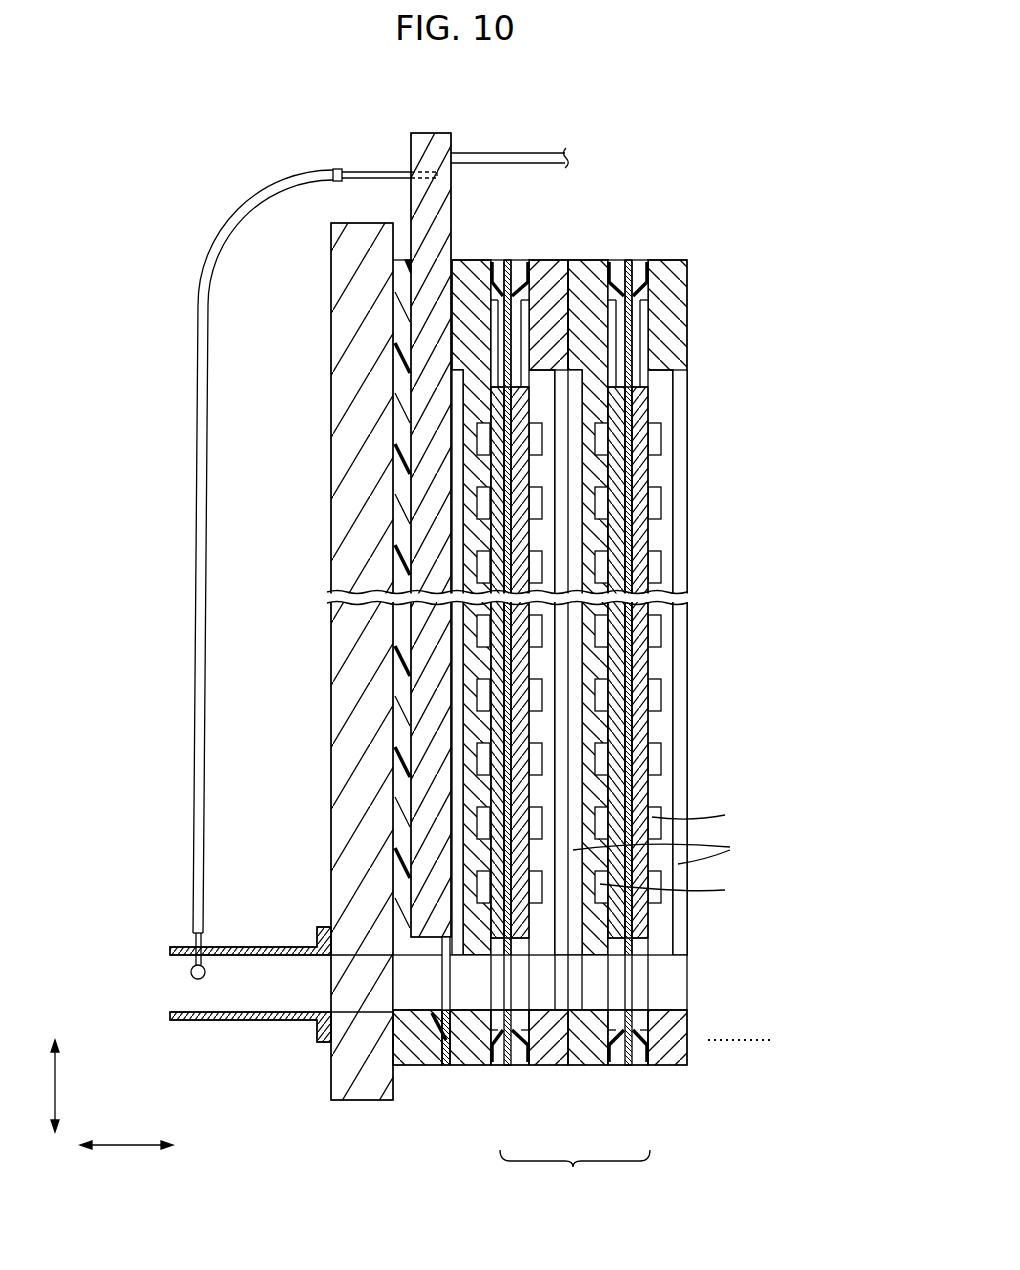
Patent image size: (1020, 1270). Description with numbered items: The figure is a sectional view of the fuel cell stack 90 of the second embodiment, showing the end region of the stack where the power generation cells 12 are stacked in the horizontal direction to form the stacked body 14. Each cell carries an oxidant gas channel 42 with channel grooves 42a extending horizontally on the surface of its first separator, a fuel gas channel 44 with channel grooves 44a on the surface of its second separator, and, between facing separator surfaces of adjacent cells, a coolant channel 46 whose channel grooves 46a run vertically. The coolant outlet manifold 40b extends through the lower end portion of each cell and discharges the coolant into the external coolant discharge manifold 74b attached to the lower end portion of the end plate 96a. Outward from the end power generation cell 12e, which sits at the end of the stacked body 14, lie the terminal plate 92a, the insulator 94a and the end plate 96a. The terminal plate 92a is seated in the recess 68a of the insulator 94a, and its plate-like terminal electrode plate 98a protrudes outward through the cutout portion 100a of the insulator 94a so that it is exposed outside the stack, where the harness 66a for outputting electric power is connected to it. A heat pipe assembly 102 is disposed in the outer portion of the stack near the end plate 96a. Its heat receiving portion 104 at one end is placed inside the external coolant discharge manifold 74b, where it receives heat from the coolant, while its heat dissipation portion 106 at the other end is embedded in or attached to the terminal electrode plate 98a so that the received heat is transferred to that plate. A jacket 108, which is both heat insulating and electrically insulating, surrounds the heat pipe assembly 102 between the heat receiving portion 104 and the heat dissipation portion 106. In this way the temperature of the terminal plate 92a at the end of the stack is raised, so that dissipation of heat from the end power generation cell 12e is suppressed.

The fuel cell stack 90 is at (408, 68).
The end plate 96a is at (329, 1100).
The terminal electrode plate 98a is at (452, 146).
The heat dissipation portion 106 is at (370, 170).
The harness 66a is at (545, 160).
The heat pipe assembly 102 is at (183, 605).
The jacket 108 is at (201, 473).
The heat receiving portion 104 is at (205, 974).
The external coolant discharge manifold 74b is at (253, 1021).
The terminal plate 92a is at (409, 693).
The cutout portion 100a is at (409, 300).
The recess 68a is at (412, 657).
The oxidant gas channel 42 is at (660, 702).
The channel grooves 42a is at (655, 686).
The fuel gas channel 44 is at (603, 766).
The channel grooves 44a is at (600, 756).
The coolant channel 46 is at (571, 408).
The channel grooves 46a is at (578, 438).
The end power generation cell 12e is at (510, 1073).
The power generation cells 12 is at (628, 1073).
The stacked body 14 is at (575, 1171).
The coolant outlet manifold 40b is at (662, 988).
The insulator 94a is at (440, 1067).